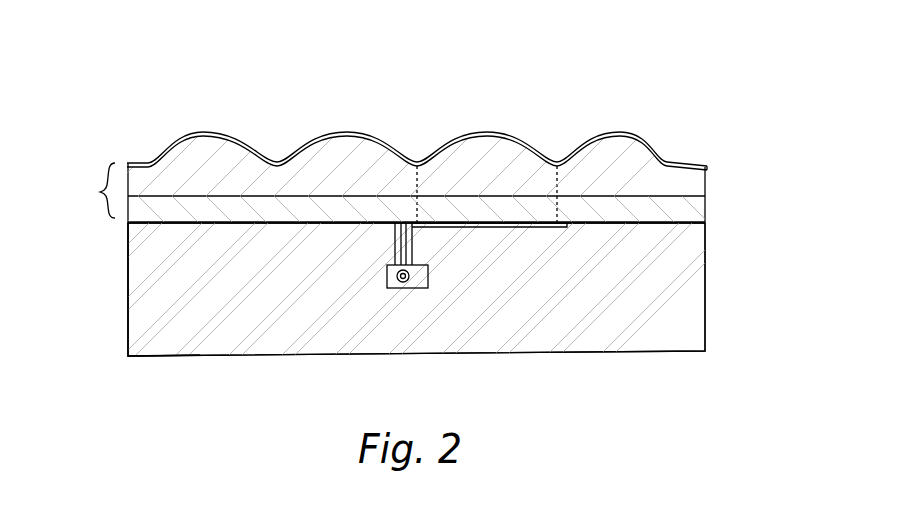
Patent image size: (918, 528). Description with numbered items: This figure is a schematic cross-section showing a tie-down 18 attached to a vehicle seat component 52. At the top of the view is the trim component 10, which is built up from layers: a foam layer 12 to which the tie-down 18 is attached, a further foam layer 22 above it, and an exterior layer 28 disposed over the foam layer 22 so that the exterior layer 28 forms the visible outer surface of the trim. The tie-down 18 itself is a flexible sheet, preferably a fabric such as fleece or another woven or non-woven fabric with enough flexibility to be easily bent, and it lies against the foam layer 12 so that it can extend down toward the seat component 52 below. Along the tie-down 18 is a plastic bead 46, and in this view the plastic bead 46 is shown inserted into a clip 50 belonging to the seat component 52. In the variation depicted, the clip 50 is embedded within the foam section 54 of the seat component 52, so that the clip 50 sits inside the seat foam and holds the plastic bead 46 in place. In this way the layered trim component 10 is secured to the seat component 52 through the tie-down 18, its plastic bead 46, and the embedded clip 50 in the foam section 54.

The trim component 10 is at (91, 190).
The foam layer 12 is at (690, 215).
The tie-down 18 is at (487, 227).
The foam layer 22 is at (692, 182).
The exterior layer 28 is at (503, 133).
The plastic bead 46 is at (412, 279).
The clip 50 is at (387, 282).
The seat component 52 is at (122, 340).
The foam section 54 is at (143, 270).